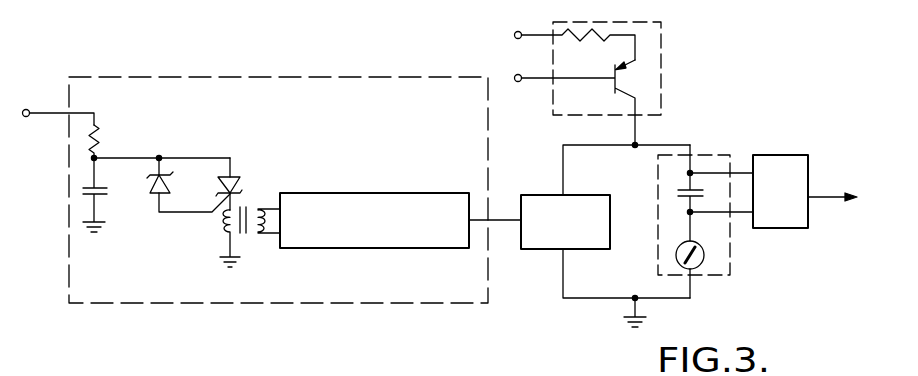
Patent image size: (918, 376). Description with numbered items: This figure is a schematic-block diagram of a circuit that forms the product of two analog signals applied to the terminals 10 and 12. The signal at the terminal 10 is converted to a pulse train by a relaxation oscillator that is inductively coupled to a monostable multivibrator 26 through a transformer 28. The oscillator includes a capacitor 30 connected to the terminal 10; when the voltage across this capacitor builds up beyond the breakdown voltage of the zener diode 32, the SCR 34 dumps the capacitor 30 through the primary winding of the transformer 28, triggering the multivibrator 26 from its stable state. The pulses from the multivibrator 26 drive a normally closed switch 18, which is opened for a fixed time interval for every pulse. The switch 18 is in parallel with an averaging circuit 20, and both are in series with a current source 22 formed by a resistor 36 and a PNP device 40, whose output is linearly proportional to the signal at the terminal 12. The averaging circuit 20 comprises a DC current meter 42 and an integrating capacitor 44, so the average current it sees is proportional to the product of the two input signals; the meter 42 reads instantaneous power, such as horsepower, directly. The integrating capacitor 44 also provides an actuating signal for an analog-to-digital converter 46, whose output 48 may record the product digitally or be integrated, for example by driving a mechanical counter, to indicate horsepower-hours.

The terminal 10 is at (26, 109).
The terminal 12 is at (518, 82).
The normally closed switch 18 is at (590, 195).
The averaging circuit 20 is at (714, 212).
The current source 22 is at (612, 72).
The monostable multivibrator 26 is at (381, 193).
The transformer 28 is at (249, 204).
The capacitor 30 is at (105, 196).
The zener diode 32 is at (171, 188).
The SCR 34 is at (234, 175).
The resistor 36 is at (588, 33).
The PNP device 40 is at (630, 78).
The DC current meter 42 is at (702, 268).
The integrating capacitor 44 is at (683, 188).
The analog-to-digital converter 46 is at (785, 155).
The output 48 is at (825, 198).